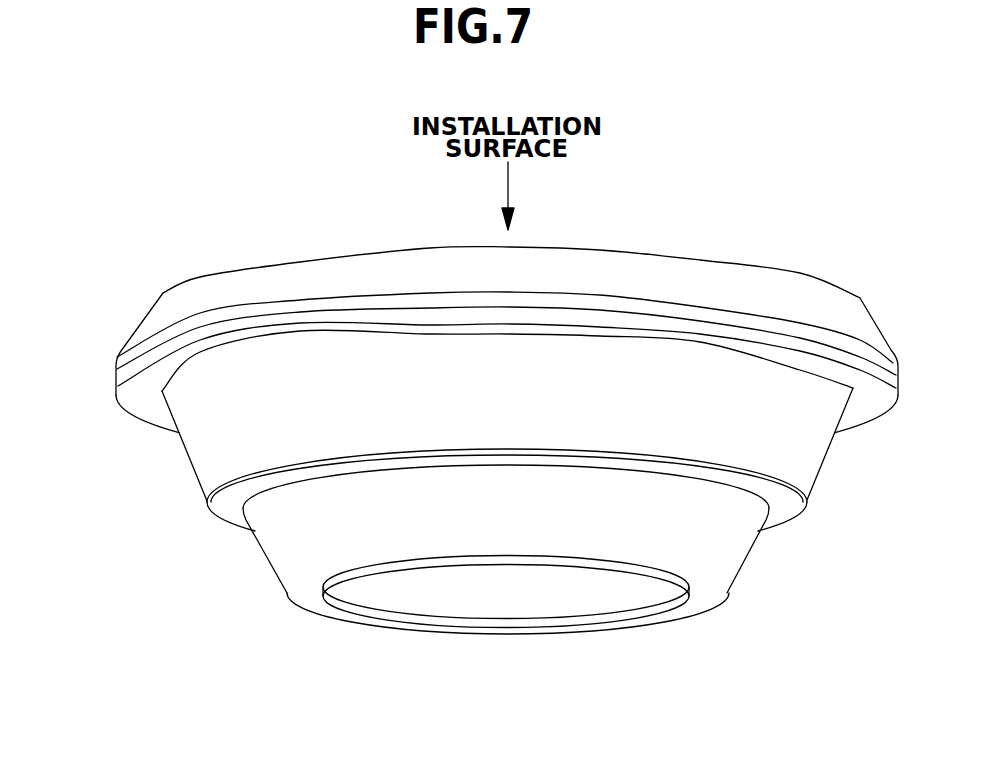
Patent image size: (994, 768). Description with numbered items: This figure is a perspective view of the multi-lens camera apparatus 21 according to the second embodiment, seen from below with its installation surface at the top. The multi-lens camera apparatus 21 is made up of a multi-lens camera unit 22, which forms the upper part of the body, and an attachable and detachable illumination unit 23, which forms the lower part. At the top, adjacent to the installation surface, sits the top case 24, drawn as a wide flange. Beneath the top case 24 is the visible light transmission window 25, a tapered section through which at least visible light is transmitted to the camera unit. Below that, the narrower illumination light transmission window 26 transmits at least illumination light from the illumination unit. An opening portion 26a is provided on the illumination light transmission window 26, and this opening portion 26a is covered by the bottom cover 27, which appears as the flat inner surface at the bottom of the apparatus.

The multi-lens camera apparatus 21 is at (155, 252).
The multi-lens camera unit 22 is at (88, 245).
The illumination unit 23 is at (88, 502).
The top case 24 is at (800, 285).
The visible light transmission window 25 is at (822, 453).
The illumination light transmission window 26 is at (735, 552).
The opening portion 26a is at (682, 602).
The bottom cover 27 is at (550, 610).